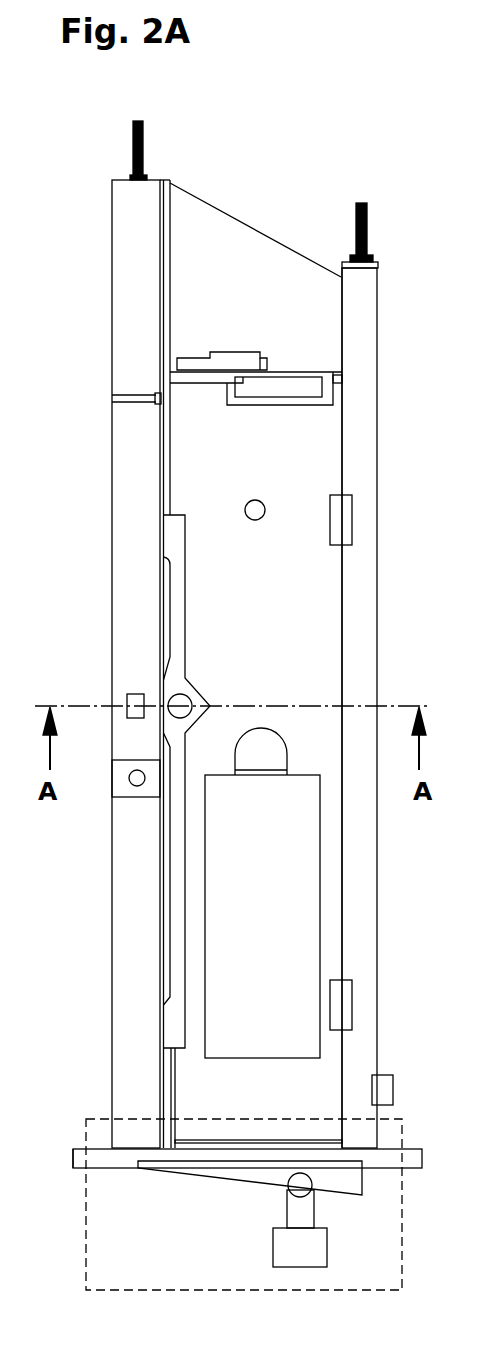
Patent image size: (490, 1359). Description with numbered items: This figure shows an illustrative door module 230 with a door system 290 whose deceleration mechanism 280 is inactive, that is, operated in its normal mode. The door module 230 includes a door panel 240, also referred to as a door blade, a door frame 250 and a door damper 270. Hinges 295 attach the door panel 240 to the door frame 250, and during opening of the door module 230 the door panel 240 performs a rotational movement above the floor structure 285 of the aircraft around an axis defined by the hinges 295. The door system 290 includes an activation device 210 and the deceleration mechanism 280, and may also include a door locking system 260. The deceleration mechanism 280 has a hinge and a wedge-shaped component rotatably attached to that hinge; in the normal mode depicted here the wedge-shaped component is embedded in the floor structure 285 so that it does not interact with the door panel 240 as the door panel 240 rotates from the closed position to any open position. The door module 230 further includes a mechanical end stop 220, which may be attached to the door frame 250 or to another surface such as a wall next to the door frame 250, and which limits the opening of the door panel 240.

The activation device 210 is at (260, 1224).
The mechanical end stop 220 is at (383, 1093).
The door module 230 is at (268, 181).
The door panel 240 is at (308, 588).
The door frame 250 is at (355, 872).
The door locking system 260 is at (152, 679).
The door damper 270 is at (289, 386).
The deceleration mechanism 280 is at (252, 1173).
The floor structure 285 is at (73, 1157).
The door system 290 is at (85, 1203).
The hinges 295 is at (343, 520).